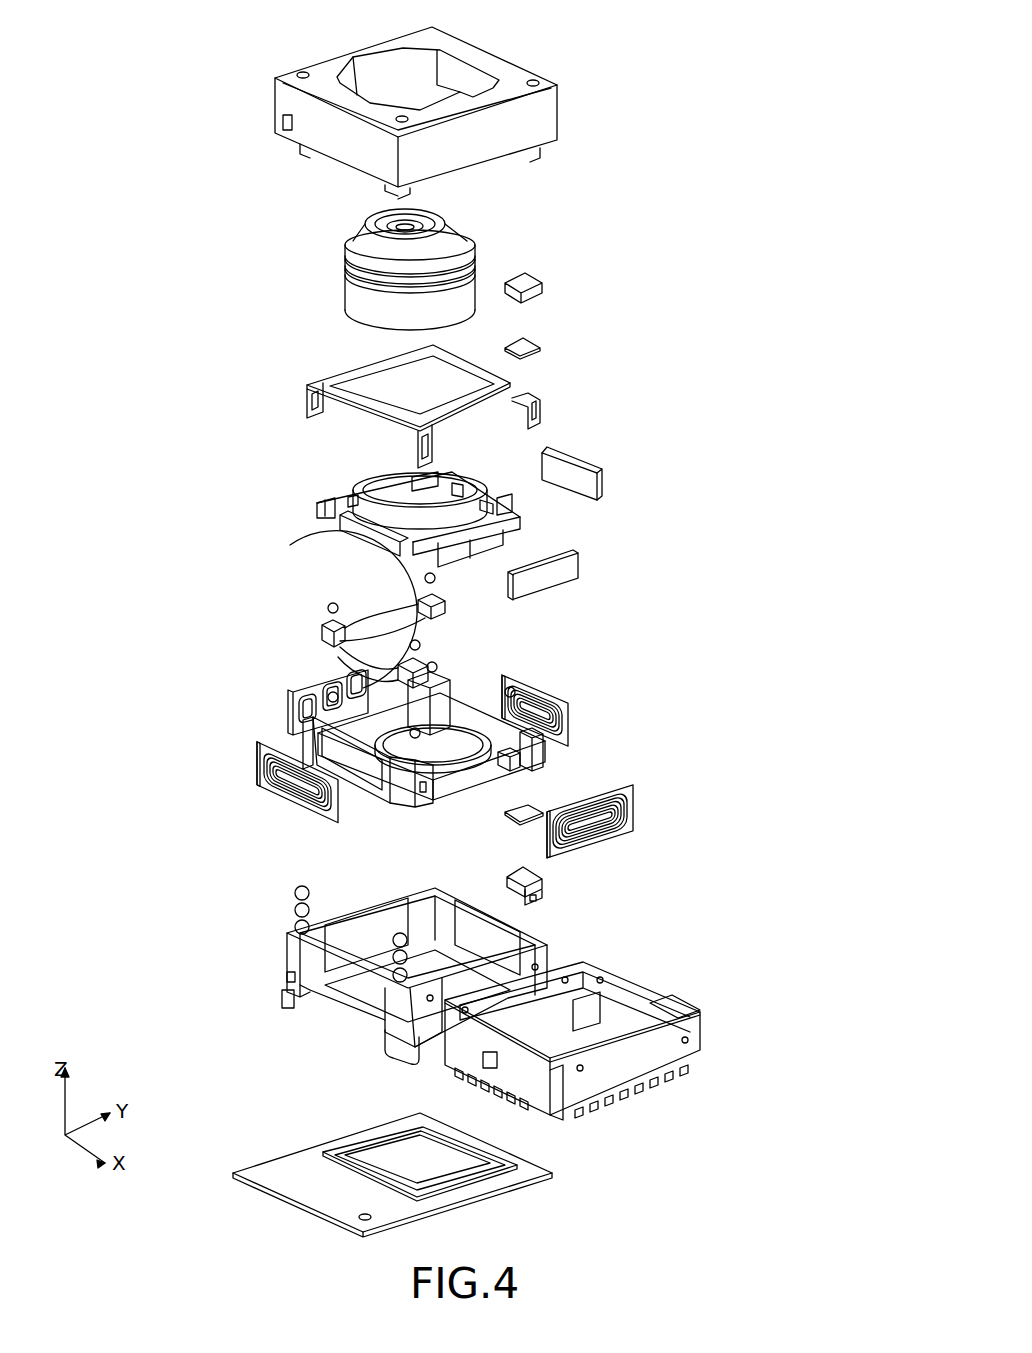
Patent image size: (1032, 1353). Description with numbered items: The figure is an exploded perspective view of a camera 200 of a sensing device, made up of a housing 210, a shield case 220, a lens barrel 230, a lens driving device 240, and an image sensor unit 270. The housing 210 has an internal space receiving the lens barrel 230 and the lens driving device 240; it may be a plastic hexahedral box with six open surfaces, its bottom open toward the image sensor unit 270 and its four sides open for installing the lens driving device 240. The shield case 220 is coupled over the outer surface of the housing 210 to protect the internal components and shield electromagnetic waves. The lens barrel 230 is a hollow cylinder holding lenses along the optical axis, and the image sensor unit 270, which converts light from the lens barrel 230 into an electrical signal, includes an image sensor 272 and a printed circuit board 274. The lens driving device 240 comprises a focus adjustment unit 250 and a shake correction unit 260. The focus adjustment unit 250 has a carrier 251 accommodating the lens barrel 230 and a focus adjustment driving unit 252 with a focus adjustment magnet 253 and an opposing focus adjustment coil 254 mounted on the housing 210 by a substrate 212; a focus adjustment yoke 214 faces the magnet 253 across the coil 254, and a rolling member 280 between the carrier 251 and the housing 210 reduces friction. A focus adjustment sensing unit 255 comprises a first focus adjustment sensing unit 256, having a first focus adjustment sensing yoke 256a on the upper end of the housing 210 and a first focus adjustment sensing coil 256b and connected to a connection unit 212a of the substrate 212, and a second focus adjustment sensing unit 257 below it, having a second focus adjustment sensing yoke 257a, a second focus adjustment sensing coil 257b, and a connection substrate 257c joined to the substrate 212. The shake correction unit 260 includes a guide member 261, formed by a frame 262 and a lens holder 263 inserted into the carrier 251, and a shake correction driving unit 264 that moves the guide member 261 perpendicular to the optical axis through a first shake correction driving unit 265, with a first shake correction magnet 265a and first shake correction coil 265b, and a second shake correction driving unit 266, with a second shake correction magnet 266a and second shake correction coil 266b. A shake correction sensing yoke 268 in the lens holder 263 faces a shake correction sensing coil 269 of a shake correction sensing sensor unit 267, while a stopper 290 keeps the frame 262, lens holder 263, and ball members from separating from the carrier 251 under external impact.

The camera 200 is at (203, 28).
The housing 210 is at (307, 1005).
The substrate 212 is at (655, 1050).
The connection unit 212a is at (672, 1001).
The focus adjustment yoke 214 is at (520, 1090).
The shield case 220 is at (545, 118).
The lens barrel 230 is at (352, 291).
The lens driving device 240 is at (121, 745).
The focus adjustment unit 250 is at (218, 753).
The carrier 251 is at (407, 783).
The focus adjustment driving unit 252 is at (221, 810).
The focus adjustment magnet 253 is at (355, 761).
The focus adjustment coil 254 is at (300, 793).
The focus adjustment sensing unit 255 is at (834, 900).
The first focus adjustment sensing unit 256 is at (769, 266).
The first focus adjustment sensing yoke 256a is at (533, 346).
The first focus adjustment sensing coil 256b is at (533, 278).
The second focus adjustment sensing unit 257 is at (769, 948).
The second focus adjustment sensing yoke 257a is at (553, 815).
The second focus adjustment sensing coil 257b is at (545, 874).
The connection substrate 257c is at (545, 896).
The shake correction unit 260 is at (275, 540).
The guide member 261 is at (171, 605).
The frame 262 is at (338, 655).
The lens holder 263 is at (362, 530).
The shake correction driving unit 264 is at (759, 573).
The first shake correction driving unit 265 is at (699, 666).
The first shake correction magnet 265a is at (540, 698).
The first shake correction coil 265b is at (625, 810).
The second shake correction driving unit 266 is at (699, 508).
The second shake correction magnet 266a is at (598, 485).
The second shake correction coil 266b is at (548, 576).
The shake correction sensing sensor unit 267 is at (216, 378).
The shake correction sensing yoke 268 is at (380, 497).
The shake correction sensing coil 269 is at (383, 527).
The image sensor unit 270 is at (218, 1073).
The image sensor 272 is at (282, 1176).
The printed circuit board 274 is at (400, 1153).
The rolling member 280 is at (285, 933).
The stopper 290 is at (340, 380).